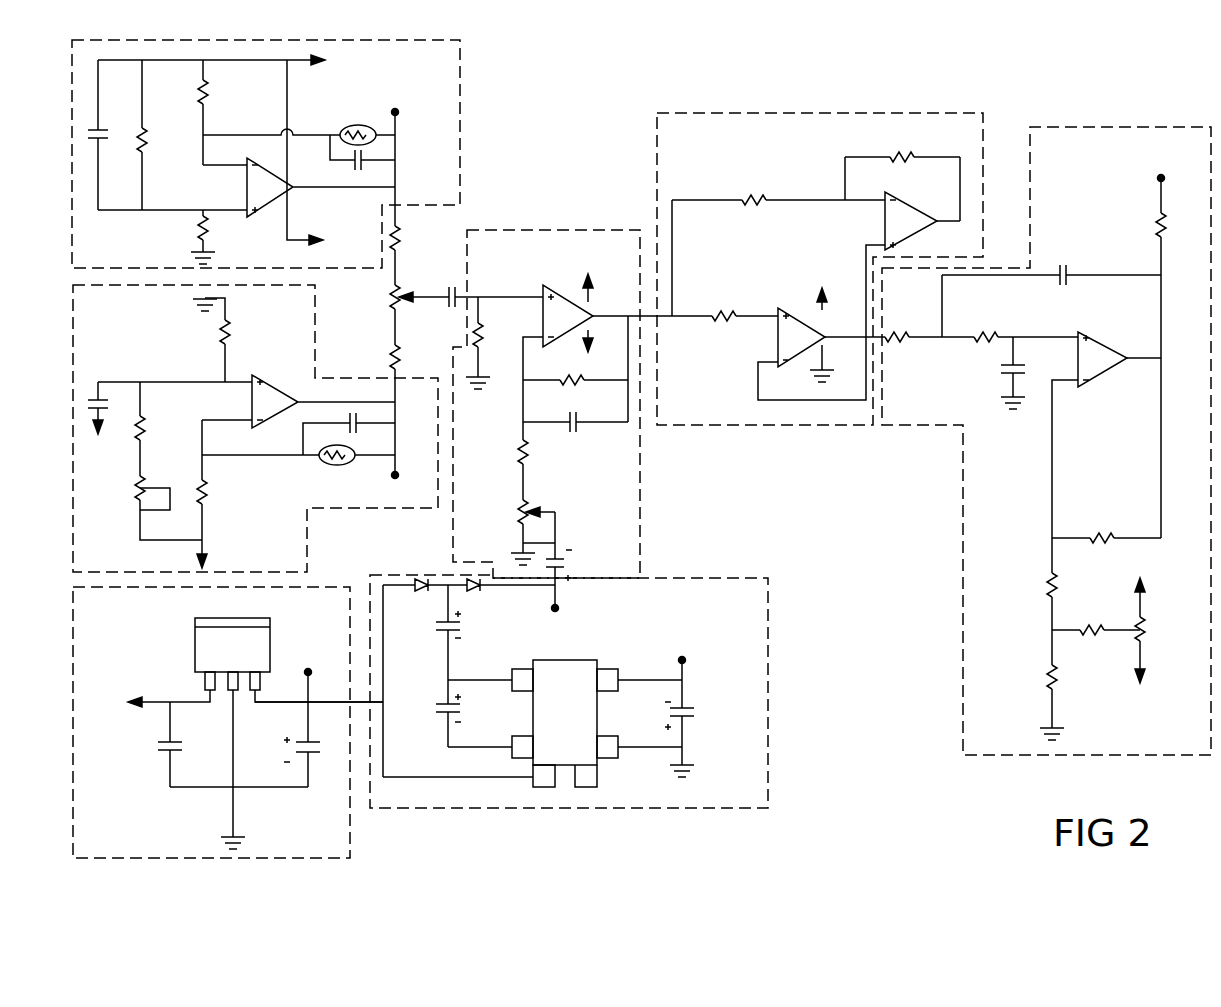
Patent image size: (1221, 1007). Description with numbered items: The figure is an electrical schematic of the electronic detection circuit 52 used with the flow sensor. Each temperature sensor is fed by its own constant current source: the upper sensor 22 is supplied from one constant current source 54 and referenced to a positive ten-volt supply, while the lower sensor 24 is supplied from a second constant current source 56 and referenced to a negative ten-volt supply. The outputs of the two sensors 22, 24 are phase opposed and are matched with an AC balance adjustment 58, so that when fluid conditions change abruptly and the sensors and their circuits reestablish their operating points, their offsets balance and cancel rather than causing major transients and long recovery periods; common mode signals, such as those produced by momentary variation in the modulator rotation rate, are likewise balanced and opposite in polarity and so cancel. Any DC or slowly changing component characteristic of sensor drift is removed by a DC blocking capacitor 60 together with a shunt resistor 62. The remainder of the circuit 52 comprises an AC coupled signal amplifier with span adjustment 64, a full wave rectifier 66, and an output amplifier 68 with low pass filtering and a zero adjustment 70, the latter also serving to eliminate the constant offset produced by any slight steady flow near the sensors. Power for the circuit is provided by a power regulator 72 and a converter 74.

The upper sensor 22 is at (345, 118).
The lower sensor 24 is at (316, 470).
The electronic detection circuit 52 is at (816, 772).
The constant current source 54 is at (462, 130).
The constant current source 56 is at (340, 510).
The AC balance adjustment 58 is at (424, 284).
The DC blocking capacitor 60 is at (444, 319).
The shunt resistor 62 is at (490, 331).
The AC coupled signal amplifier with span adjustment 64 is at (642, 487).
The full wave rectifier 66 is at (843, 113).
The output amplifier 68 is at (1122, 112).
The zero adjustment 70 is at (1110, 633).
The power regulator 72 is at (352, 832).
The converter 74 is at (610, 810).